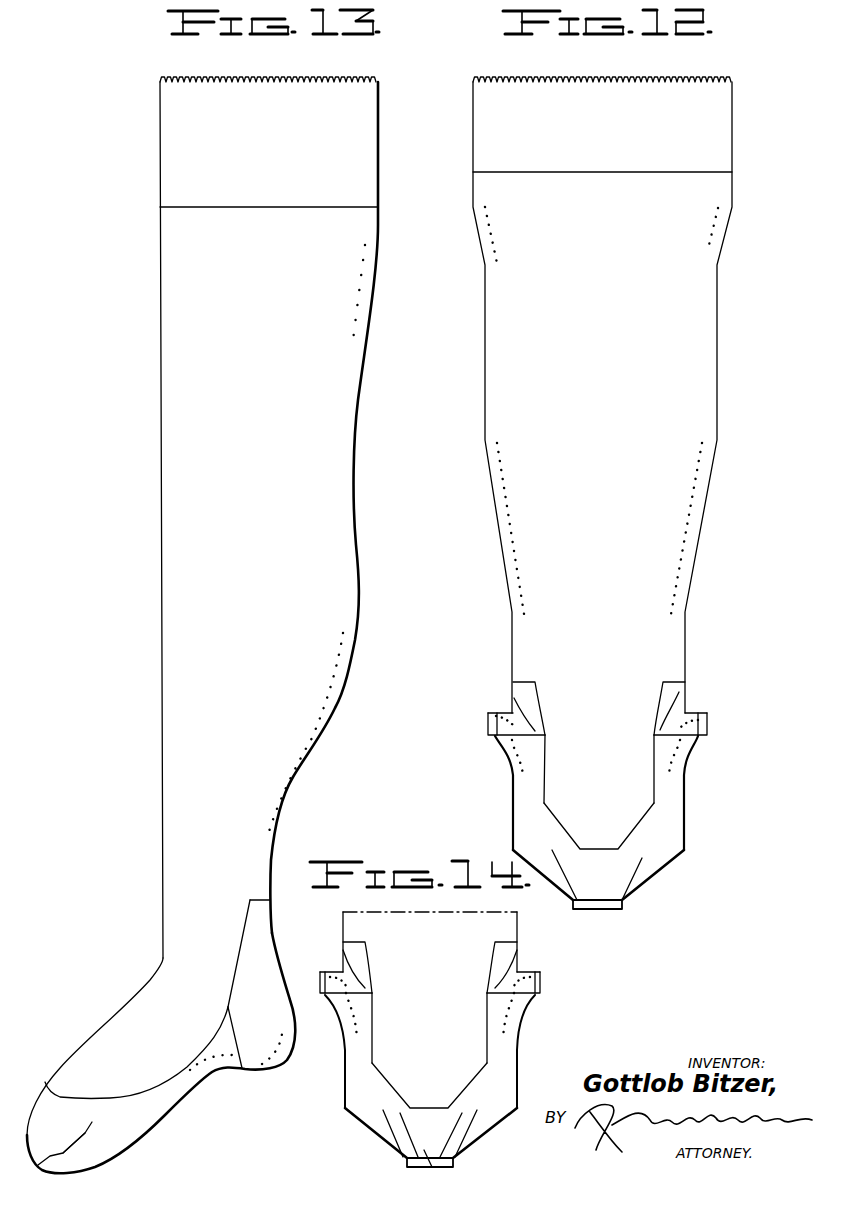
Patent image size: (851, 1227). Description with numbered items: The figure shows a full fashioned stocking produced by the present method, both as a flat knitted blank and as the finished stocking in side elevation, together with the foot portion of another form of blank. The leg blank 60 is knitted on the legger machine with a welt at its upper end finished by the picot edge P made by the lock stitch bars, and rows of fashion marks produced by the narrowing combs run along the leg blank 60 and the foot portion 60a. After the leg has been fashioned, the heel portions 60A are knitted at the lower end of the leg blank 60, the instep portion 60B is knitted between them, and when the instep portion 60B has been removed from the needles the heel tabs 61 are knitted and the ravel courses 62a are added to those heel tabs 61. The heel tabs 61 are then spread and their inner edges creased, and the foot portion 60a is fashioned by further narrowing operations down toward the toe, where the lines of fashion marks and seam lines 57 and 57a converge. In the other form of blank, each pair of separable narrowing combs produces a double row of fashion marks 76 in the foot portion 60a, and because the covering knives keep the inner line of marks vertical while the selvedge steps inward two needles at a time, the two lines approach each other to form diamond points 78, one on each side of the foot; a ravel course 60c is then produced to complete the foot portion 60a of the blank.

In FIG. 13, the picot edge P is at (363, 81).
In FIG. 12, the picot edge P is at (704, 81).
In FIG. 13, the leg blank 60 is at (341, 478).
In FIG. 12, the leg blank 60 is at (675, 533).
In FIG. 13, the heel portion 60A is at (256, 917).
In FIG. 12, the heel portion 60A is at (665, 686).
In FIG. 14, the heel portion 60A is at (503, 945).
In FIG. 12, the instep portion 60B is at (585, 727).
In FIG. 14, the instep portion 60B is at (433, 980).
In FIG. 13, the foot portion 60a is at (168, 1097).
In FIG. 12, the foot portion 60a is at (672, 812).
In FIG. 14, the foot portion 60a is at (507, 1053).
In FIG. 12, the ravel course 60c is at (610, 910).
In FIG. 14, the ravel course 60c is at (454, 1163).
In FIG. 13, the heel tab 61 is at (262, 1058).
In FIG. 12, the heel tab 61 is at (500, 726).
In FIG. 14, the heel tab 61 is at (333, 985).
In FIG. 12, the ravel course 62a is at (490, 713).
In FIG. 14, the ravel course 62a is at (326, 972).
In FIG. 13, the toe pocket line 57 is at (85, 1133).
In FIG. 12, the toe pocket line 57 is at (641, 858).
In FIG. 13, the toe pocket seam line 57a is at (105, 1160).
In FIG. 12, the toe pocket seam line 57a is at (619, 893).
In FIG. 14, the double row of fashion marks 76 is at (463, 1110).
In FIG. 14, the diamond point 78 is at (431, 1158).